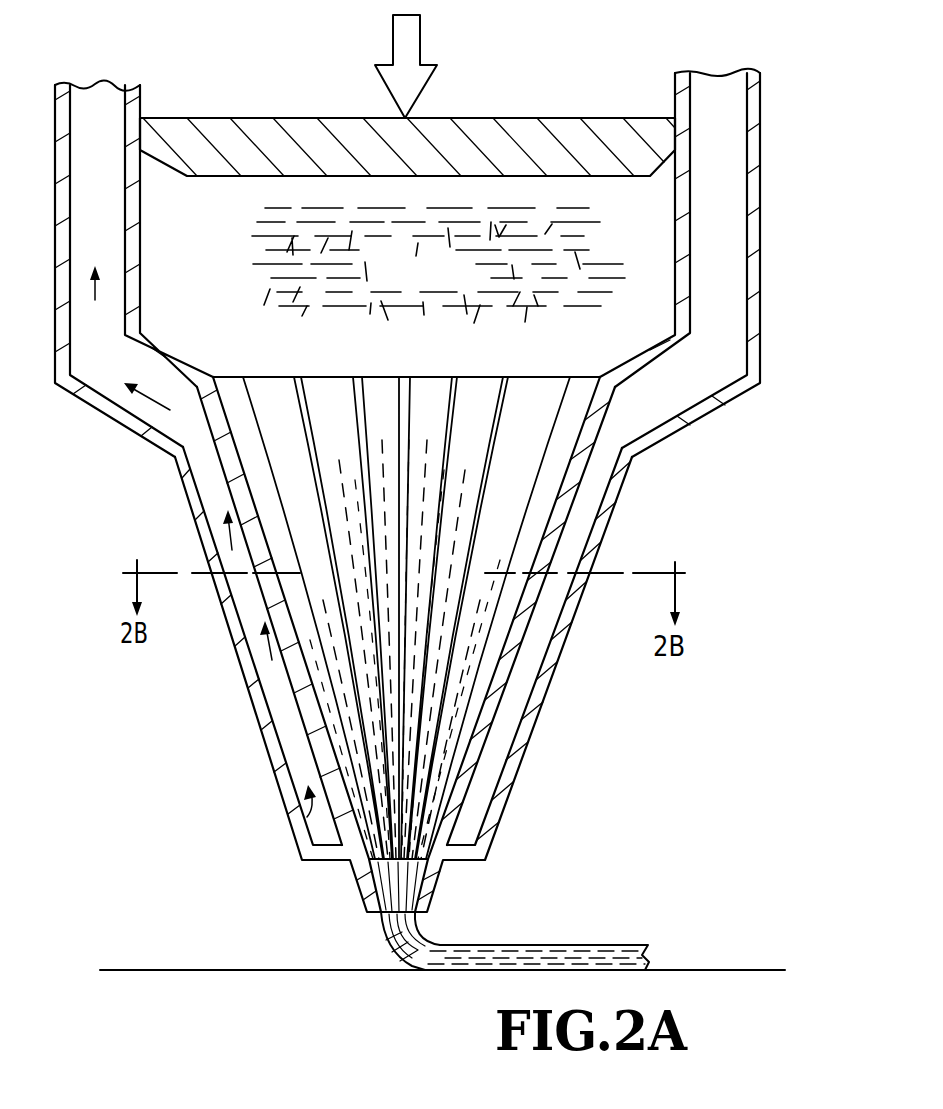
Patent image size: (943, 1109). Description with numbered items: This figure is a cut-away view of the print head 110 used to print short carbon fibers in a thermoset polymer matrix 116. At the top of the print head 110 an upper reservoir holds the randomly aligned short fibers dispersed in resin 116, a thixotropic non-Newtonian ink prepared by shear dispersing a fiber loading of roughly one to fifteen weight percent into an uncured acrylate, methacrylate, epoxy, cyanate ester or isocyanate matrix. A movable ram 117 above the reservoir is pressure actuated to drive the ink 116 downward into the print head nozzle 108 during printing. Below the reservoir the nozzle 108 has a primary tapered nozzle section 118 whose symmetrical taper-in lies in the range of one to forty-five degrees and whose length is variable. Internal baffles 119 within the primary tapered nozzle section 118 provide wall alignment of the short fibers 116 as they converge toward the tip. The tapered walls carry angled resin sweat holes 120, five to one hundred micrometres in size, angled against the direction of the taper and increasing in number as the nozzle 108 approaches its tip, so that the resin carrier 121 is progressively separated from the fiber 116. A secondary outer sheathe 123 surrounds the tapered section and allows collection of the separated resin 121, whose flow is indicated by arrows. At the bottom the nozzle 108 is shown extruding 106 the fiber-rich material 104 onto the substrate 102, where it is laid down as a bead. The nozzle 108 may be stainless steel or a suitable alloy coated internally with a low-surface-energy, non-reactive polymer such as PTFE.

The substrate 102 is at (185, 970).
The material 104 is at (587, 945).
The extruding 106 is at (381, 935).
The print head nozzle 108 is at (433, 887).
The print head 110 is at (760, 166).
The short carbon fibers in a thermoset polymer matrix 116 is at (437, 282).
The movable ram 117 is at (528, 118).
The primary tapered nozzle section 118 is at (230, 493).
The internal baffles 119 is at (355, 376).
The angled resin sweat holes 120 is at (222, 438).
The resin carrier 121 is at (123, 400).
The secondary outer sheathe 123 is at (262, 733).